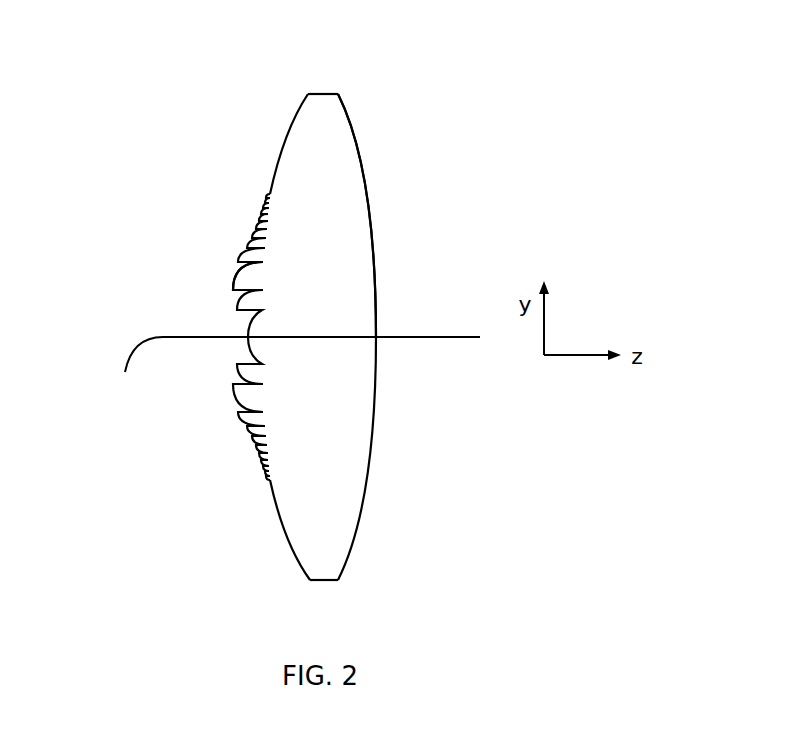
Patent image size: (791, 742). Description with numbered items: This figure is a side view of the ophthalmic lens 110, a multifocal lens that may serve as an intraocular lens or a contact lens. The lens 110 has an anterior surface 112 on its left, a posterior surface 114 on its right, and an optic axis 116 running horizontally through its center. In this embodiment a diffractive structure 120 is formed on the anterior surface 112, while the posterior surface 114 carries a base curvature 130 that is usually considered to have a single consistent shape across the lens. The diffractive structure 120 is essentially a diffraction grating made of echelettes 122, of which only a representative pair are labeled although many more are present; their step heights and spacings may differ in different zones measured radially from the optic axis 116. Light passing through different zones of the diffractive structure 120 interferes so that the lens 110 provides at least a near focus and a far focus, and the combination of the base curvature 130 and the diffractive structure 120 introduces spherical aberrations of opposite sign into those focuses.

The ophthalmic lens 110 is at (302, 318).
The anterior surface 112 is at (269, 545).
The posterior surface 114 is at (384, 545).
The optic axis 116 is at (291, 370).
The diffractive structure 120 is at (200, 317).
The echelettes 122 is at (243, 278).
The base curvature 130 is at (408, 280).